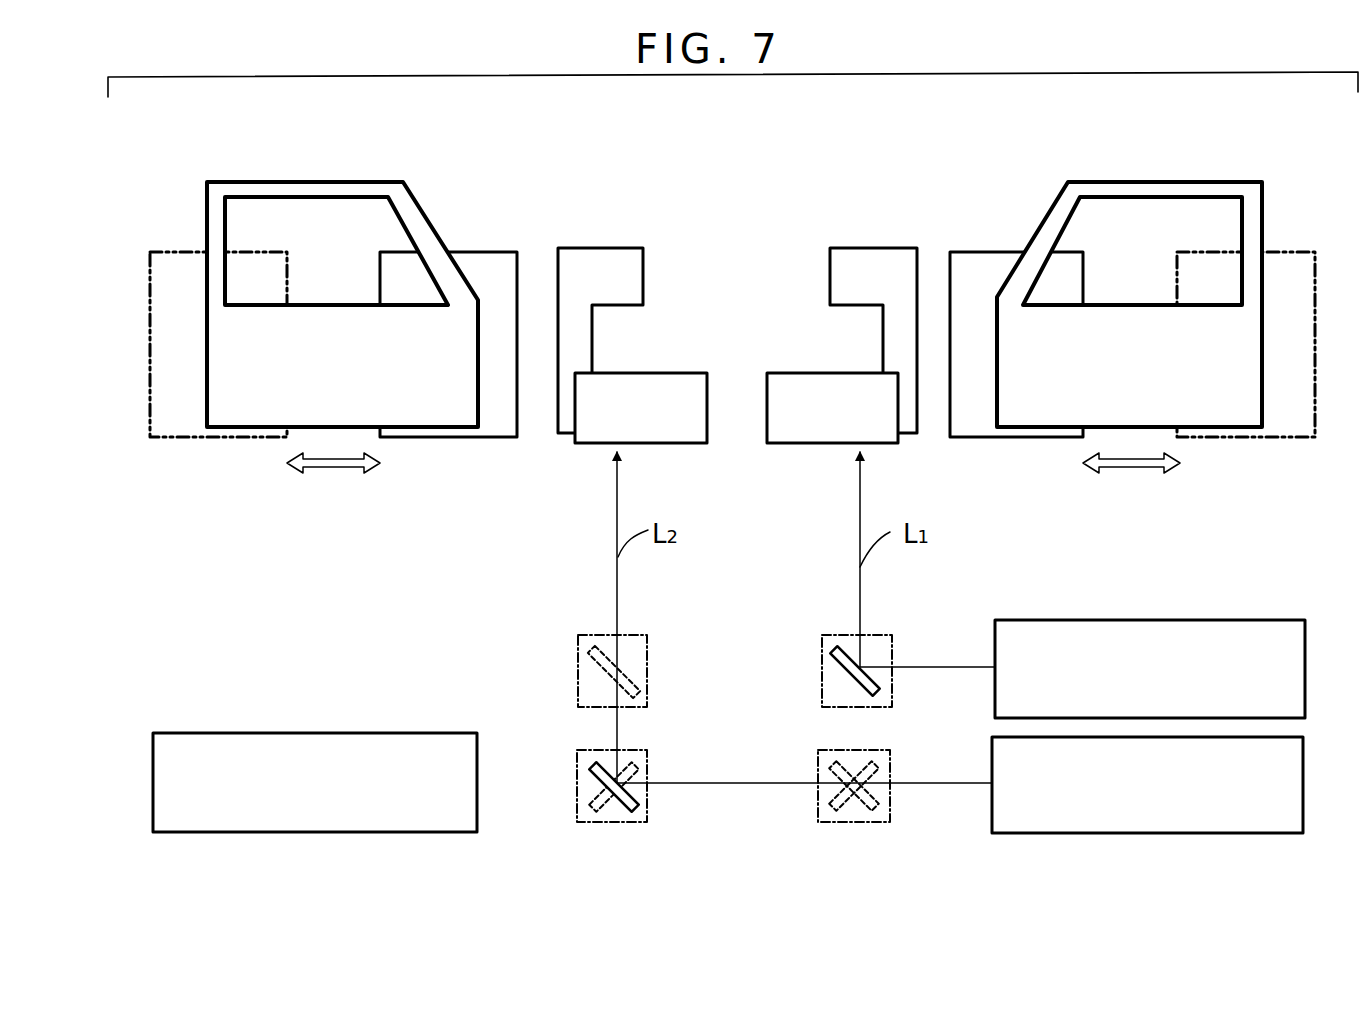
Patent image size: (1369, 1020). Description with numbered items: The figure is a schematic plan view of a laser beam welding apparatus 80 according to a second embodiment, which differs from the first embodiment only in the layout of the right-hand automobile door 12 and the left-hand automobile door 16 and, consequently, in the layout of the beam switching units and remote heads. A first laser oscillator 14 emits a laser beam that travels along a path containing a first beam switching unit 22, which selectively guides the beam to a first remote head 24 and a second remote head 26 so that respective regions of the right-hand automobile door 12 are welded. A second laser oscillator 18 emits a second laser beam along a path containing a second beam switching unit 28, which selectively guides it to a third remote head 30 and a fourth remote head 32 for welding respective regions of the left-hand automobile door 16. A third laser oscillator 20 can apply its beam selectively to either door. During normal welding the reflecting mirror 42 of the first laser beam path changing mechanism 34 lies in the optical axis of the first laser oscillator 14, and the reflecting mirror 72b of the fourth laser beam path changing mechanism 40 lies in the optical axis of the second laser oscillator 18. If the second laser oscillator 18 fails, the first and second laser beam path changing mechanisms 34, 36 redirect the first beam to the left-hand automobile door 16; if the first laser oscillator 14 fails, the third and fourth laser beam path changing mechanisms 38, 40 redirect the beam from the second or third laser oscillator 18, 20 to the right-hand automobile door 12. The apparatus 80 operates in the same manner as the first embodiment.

The laser beam welding apparatus 80 is at (1007, 115).
The left-hand automobile door 16 is at (322, 187).
The right-hand automobile door 12 is at (1190, 188).
The fourth remote head 32 is at (483, 265).
The second remote head 26 is at (973, 260).
The third remote head 30 is at (578, 258).
The first remote head 24 is at (855, 258).
The first beam switching unit 22 is at (803, 383).
The second beam switching unit 28 is at (693, 443).
The first laser oscillator 14 is at (1112, 638).
The second laser oscillator 18 is at (1148, 817).
The third laser oscillator 20 is at (273, 753).
The first laser beam path changing mechanism 34 is at (813, 652).
The second laser beam path changing mechanism 36 is at (558, 650).
The third laser beam path changing mechanism 38 is at (805, 810).
The fourth laser beam path changing mechanism 40 is at (655, 812).
The reflecting mirror 42 is at (877, 678).
The reflecting mirror 72b is at (600, 776).